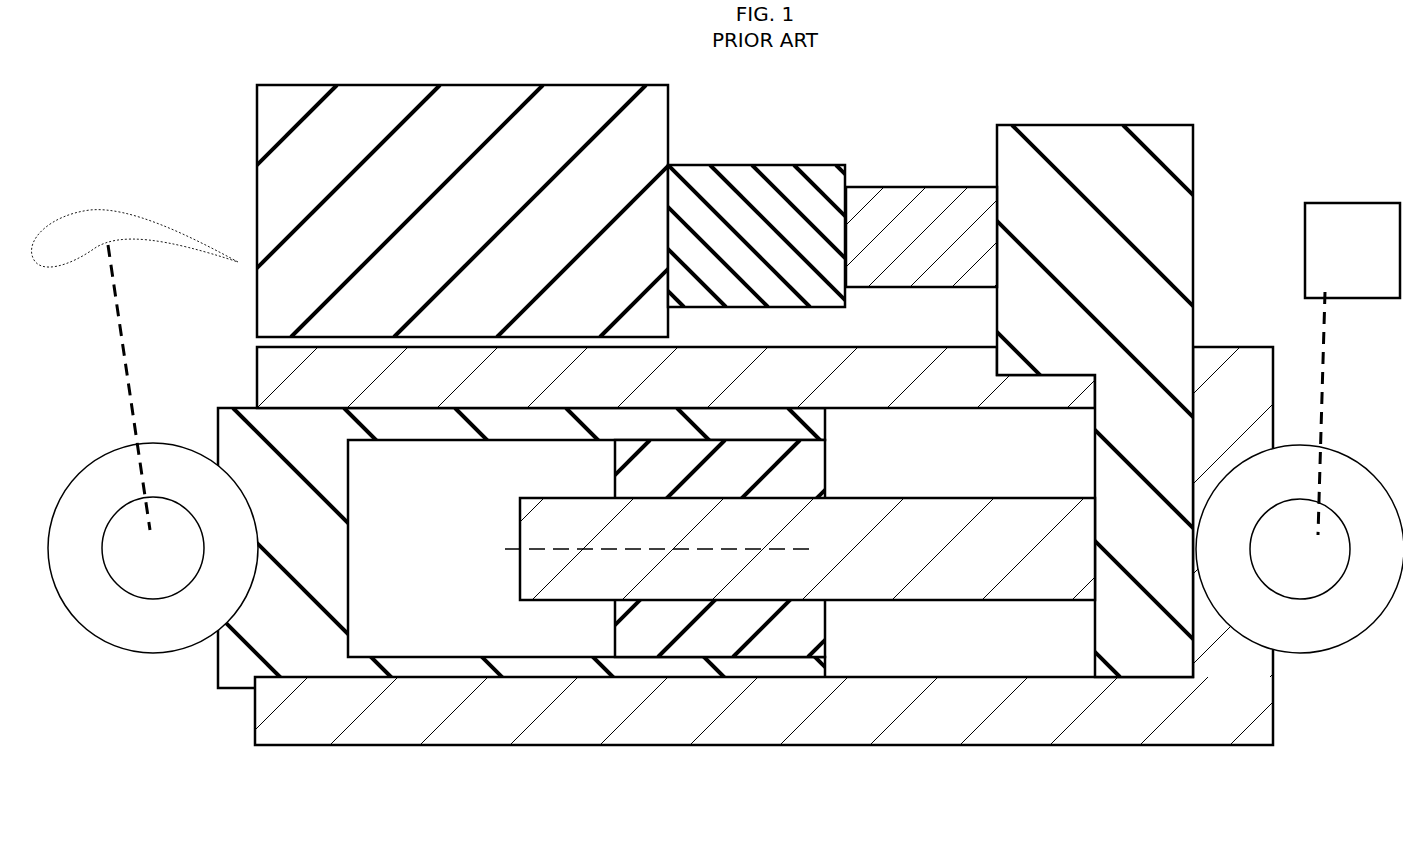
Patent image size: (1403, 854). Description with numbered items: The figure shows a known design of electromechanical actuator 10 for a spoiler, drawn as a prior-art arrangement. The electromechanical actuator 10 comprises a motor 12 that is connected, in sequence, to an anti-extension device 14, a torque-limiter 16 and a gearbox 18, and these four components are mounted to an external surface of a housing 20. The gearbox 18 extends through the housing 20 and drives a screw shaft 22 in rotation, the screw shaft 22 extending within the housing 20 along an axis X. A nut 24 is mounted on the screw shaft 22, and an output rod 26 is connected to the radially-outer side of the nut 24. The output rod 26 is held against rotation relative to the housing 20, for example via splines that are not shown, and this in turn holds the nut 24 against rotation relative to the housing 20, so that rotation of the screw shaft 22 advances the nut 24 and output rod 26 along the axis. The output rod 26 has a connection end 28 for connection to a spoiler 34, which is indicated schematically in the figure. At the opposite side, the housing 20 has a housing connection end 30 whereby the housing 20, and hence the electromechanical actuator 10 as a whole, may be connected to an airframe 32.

The electromechanical actuator 10 is at (221, 107).
The motor 12 is at (448, 229).
The anti-extension device 14 is at (748, 222).
The torque-limiter 16 is at (907, 223).
The gearbox 18 is at (1074, 276).
The housing 20 is at (771, 391).
The screw shaft 22 is at (868, 571).
The nut 24 is at (708, 480).
The output rod 26 is at (278, 527).
The connection end 28 is at (194, 611).
The housing connection end 30 is at (1291, 641).
The airframe 32 is at (1337, 271).
The spoiler 34 is at (46, 258).